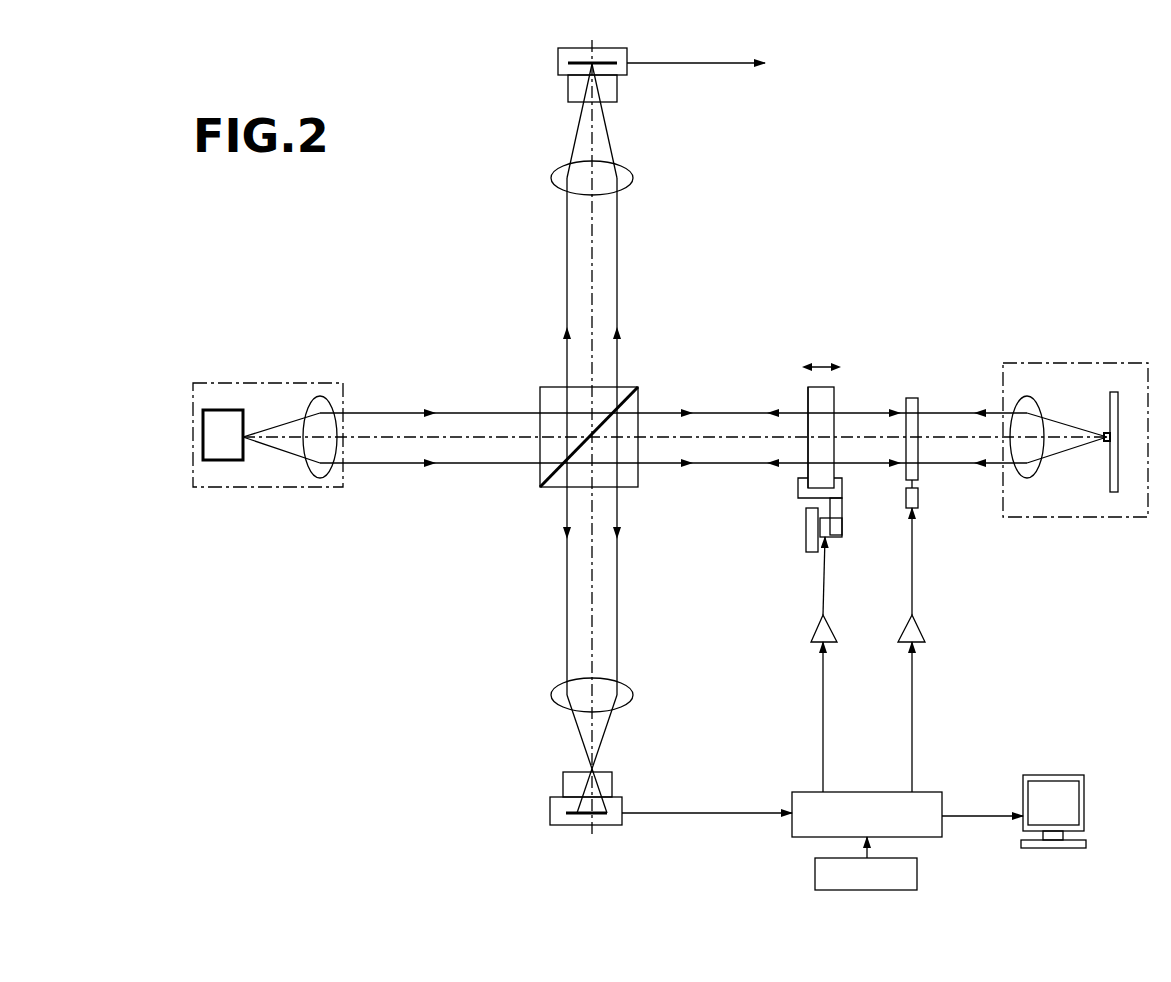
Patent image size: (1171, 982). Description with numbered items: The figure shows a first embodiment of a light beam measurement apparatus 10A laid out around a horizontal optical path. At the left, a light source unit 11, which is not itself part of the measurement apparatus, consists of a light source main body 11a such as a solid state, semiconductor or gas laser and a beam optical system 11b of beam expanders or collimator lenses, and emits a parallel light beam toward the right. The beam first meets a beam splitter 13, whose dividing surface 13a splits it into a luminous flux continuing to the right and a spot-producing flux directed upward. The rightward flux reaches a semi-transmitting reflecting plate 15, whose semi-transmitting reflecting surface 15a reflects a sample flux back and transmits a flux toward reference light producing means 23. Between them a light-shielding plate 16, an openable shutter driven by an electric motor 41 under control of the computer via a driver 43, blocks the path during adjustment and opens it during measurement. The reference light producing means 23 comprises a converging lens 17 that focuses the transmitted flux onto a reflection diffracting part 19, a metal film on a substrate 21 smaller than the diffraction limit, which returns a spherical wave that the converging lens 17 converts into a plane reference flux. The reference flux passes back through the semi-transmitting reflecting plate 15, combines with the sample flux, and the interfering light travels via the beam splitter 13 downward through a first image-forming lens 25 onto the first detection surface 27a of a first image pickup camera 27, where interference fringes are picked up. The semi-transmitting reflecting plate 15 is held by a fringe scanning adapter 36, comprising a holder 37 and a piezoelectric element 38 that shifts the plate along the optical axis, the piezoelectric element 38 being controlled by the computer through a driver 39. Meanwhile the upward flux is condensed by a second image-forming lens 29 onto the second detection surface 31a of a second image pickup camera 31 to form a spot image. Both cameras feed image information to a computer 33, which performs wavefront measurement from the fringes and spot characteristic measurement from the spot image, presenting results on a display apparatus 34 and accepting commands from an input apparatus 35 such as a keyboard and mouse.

The light beam measurement apparatus 10A is at (955, 216).
The light source unit 11 is at (234, 494).
The light source main body 11a is at (215, 410).
The beam optical system 11b is at (324, 396).
The beam splitter 13 is at (636, 388).
The dividing surface 13a is at (540, 480).
The semi-transmitting reflecting plate 15 is at (848, 378).
The semi-transmitting reflecting surface 15a is at (807, 402).
The light-shielding plate 16 is at (923, 380).
The converging lens 17 is at (1020, 398).
The reflection diffracting part 19 is at (1104, 432).
The substrate 21 is at (1110, 488).
The reference light producing means 23 is at (1090, 362).
The first image-forming lens 25 is at (551, 694).
The first image pickup camera 27 is at (550, 806).
The first detection surface 27a is at (604, 810).
The second image-forming lens 29 is at (551, 176).
The second image pickup camera 31 is at (558, 64).
The second detection surface 31a is at (628, 72).
The computer 33 is at (798, 792).
The display apparatus 34 is at (1084, 796).
The input apparatus 35 is at (917, 872).
The fringe scanning adapter 36 is at (806, 548).
The holder 37 is at (842, 504).
The piezoelectric element 38 is at (842, 532).
The driver 39 is at (812, 628).
The electric motor 41 is at (918, 500).
The driver 43 is at (925, 634).